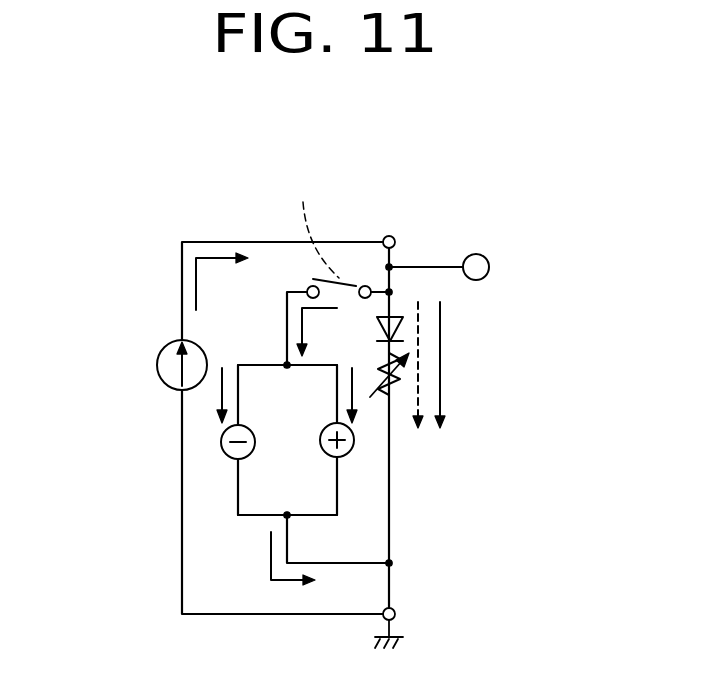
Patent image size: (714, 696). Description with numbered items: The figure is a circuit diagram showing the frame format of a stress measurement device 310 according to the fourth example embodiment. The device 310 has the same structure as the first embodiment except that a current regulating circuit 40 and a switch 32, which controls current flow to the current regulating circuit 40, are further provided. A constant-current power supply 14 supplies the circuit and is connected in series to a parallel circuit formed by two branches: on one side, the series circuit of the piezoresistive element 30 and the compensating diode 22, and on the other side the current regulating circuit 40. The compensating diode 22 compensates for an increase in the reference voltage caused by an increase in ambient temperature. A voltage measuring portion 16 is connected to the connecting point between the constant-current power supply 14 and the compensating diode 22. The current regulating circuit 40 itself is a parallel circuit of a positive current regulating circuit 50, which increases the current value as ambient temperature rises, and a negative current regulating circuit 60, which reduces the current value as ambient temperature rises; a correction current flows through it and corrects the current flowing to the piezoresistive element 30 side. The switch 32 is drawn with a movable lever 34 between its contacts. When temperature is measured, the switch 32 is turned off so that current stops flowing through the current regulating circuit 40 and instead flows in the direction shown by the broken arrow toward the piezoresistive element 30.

The stress measurement device 310 is at (466, 155).
The constant-current power supply 14 is at (157, 365).
The voltage measuring portion 16 is at (489, 267).
The compensating diode 22 is at (396, 313).
The piezoresistive element 30 is at (388, 397).
The switch 32 is at (352, 266).
The switch lever 34 is at (323, 280).
The current regulating circuit 40 is at (221, 558).
The positive current regulating circuit 50 is at (358, 450).
The negative current regulating circuit 60 is at (220, 450).